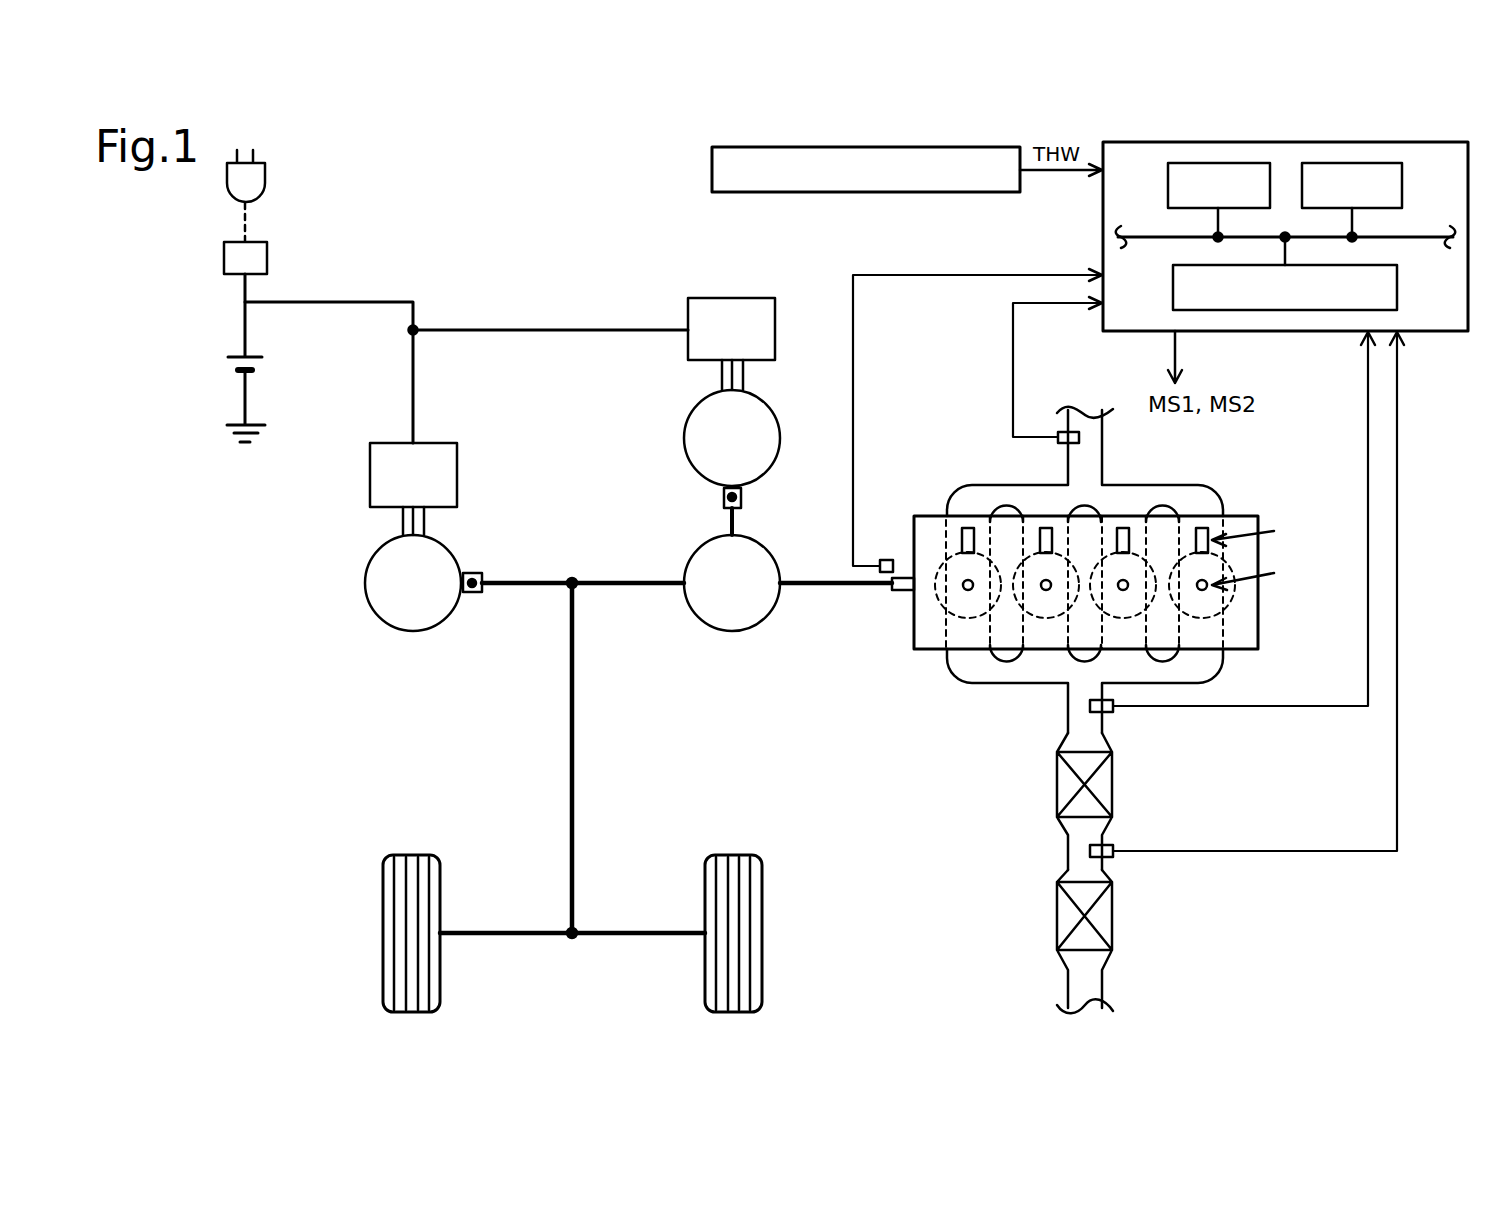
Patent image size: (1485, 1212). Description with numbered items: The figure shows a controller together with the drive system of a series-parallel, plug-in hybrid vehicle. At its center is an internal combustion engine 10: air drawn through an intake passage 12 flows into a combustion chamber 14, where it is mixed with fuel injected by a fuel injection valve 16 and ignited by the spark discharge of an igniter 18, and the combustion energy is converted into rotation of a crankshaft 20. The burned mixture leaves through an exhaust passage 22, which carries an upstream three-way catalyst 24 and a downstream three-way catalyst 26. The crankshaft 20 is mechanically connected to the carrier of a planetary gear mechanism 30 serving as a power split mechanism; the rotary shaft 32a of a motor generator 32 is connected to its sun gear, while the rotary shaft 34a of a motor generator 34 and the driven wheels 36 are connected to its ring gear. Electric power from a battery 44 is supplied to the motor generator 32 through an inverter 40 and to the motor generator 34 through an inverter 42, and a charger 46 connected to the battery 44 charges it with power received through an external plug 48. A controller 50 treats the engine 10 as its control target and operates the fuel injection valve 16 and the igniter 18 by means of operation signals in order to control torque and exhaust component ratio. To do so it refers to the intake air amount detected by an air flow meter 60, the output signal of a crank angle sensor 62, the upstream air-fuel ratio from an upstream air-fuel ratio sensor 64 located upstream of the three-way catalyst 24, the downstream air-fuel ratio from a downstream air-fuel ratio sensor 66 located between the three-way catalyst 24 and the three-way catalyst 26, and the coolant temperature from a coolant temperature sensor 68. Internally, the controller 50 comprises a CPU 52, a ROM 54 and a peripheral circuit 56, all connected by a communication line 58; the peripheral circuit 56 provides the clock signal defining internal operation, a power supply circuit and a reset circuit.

The internal combustion engine 10 is at (1244, 473).
The intake passage 12 is at (1101, 452).
The combustion chamber 14 is at (1086, 582).
The fuel injection valve 16 is at (968, 526).
The igniter 18 is at (968, 591).
The crankshaft 20 is at (900, 591).
The exhaust passage 22 is at (1215, 662).
The upstream three-way catalyst 24 is at (1112, 786).
The downstream three-way catalyst 26 is at (1112, 918).
The planetary gear mechanism 30 is at (777, 555).
The motor generator 32 is at (777, 412).
The rotary shaft 32a is at (742, 497).
The motor generator 34 is at (458, 555).
The rotary shaft 34a is at (473, 593).
The driven wheels 36 is at (413, 855).
The inverter 40 is at (757, 298).
The inverter 42 is at (440, 443).
The battery 44 is at (237, 356).
The charger 46 is at (268, 258).
The external plug 48 is at (266, 172).
The controller 50 is at (1405, 142).
The CPU 52 is at (1168, 188).
The ROM 54 is at (1403, 186).
The peripheral circuit 56 is at (1398, 302).
The communication line 58 is at (1413, 240).
The air flow meter 60 is at (1058, 444).
The crank angle sensor 62 is at (888, 538).
The upstream air-fuel ratio sensor 64 is at (1108, 713).
The downstream air-fuel ratio sensor 66 is at (1110, 845).
The coolant temperature sensor 68 is at (711, 170).